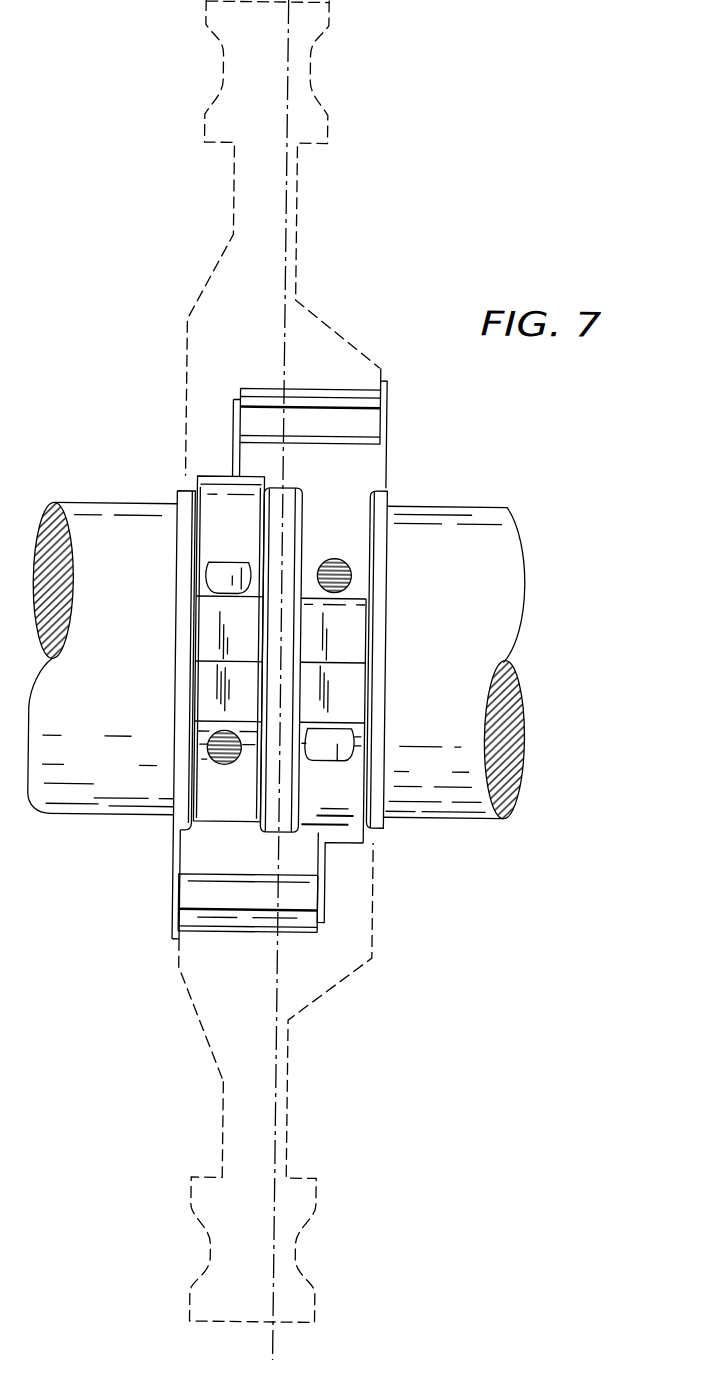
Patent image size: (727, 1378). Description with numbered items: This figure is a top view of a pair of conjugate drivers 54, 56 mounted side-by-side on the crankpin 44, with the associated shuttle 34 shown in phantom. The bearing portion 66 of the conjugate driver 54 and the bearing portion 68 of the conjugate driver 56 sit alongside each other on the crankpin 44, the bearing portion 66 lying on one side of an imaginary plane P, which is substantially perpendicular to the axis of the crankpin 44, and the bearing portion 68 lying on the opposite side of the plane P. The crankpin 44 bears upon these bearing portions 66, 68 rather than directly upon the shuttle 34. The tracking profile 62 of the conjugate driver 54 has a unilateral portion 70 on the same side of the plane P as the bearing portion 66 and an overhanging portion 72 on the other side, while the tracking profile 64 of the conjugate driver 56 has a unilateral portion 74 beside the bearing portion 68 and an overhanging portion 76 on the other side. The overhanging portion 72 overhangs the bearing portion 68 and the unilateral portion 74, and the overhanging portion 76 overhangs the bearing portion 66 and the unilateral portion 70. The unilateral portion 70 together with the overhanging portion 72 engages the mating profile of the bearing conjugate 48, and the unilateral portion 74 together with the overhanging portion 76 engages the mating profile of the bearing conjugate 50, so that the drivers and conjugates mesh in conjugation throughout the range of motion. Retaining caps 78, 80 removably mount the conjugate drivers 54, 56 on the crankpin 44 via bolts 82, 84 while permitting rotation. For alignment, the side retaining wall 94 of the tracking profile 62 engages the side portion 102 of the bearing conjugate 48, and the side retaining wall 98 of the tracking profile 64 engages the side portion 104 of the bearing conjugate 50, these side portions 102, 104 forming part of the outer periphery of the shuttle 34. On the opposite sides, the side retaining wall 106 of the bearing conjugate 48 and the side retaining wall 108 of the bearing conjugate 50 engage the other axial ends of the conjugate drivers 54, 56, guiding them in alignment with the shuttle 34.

The imaginary plane P is at (283, 208).
The shuttle 34 is at (314, 1026).
The crankpin 44 is at (492, 641).
The bearing conjugate 48 is at (221, 945).
The bearing conjugate 50 is at (342, 382).
The conjugate driver 54 is at (163, 707).
The conjugate driver 56 is at (397, 627).
The tracking profile 62 is at (200, 890).
The tracking profile 64 is at (325, 425).
The bearing portion 66 is at (215, 806).
The bearing portion 68 is at (346, 537).
The unilateral portion 70 is at (254, 910).
The overhanging portion 72 is at (318, 918).
The unilateral portion 74 is at (309, 413).
The overhanging portion 76 is at (254, 417).
The retaining cap 78 is at (216, 521).
The retaining cap 80 is at (347, 813).
The bolt 82 is at (214, 571).
The bolt 84 is at (350, 750).
The side retaining wall 94 is at (173, 934).
The side retaining wall 98 is at (386, 387).
The side portion 102 is at (190, 940).
The side portion 104 is at (361, 382).
The side retaining wall 106 is at (323, 910).
The side retaining wall 108 is at (229, 427).